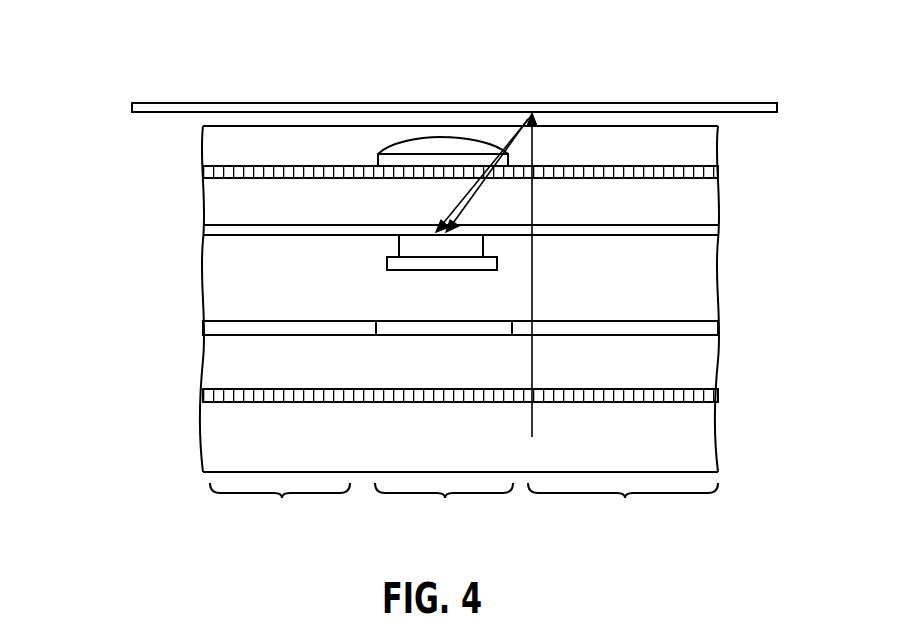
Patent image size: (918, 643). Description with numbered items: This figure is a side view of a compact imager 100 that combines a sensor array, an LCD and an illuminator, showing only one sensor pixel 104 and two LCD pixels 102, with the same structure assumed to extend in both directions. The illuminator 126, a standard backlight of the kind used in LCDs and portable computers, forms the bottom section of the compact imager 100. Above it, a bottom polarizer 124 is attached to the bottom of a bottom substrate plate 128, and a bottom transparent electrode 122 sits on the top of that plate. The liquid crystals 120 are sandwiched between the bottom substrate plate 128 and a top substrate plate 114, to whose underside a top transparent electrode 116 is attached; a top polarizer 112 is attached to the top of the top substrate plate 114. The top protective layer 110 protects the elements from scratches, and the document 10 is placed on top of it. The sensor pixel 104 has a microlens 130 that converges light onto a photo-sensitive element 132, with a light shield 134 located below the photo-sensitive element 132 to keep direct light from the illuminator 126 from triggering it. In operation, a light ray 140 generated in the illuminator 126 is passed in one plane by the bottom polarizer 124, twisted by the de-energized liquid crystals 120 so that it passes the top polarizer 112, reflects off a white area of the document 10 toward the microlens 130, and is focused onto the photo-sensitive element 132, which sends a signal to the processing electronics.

The document 10 is at (681, 104).
The compact imager 100 is at (133, 441).
The LCD pixel 102 is at (464, 509).
The sensor pixel 104 is at (444, 509).
The top protective layer 110 is at (718, 146).
The top polarizer 112 is at (718, 172).
The top substrate plate 114 is at (718, 207).
The top transparent electrode 116 is at (718, 232).
The liquid crystals 120 is at (694, 284).
The bottom transparent electrode 122 is at (718, 330).
The bottom polarizer 124 is at (718, 396).
The illuminator 126 is at (718, 431).
The bottom substrate plate 128 is at (718, 362).
The microlens 130 is at (378, 151).
The photo-sensitive element 132 is at (399, 250).
The light shield 134 is at (387, 264).
The light ray 140 is at (532, 418).